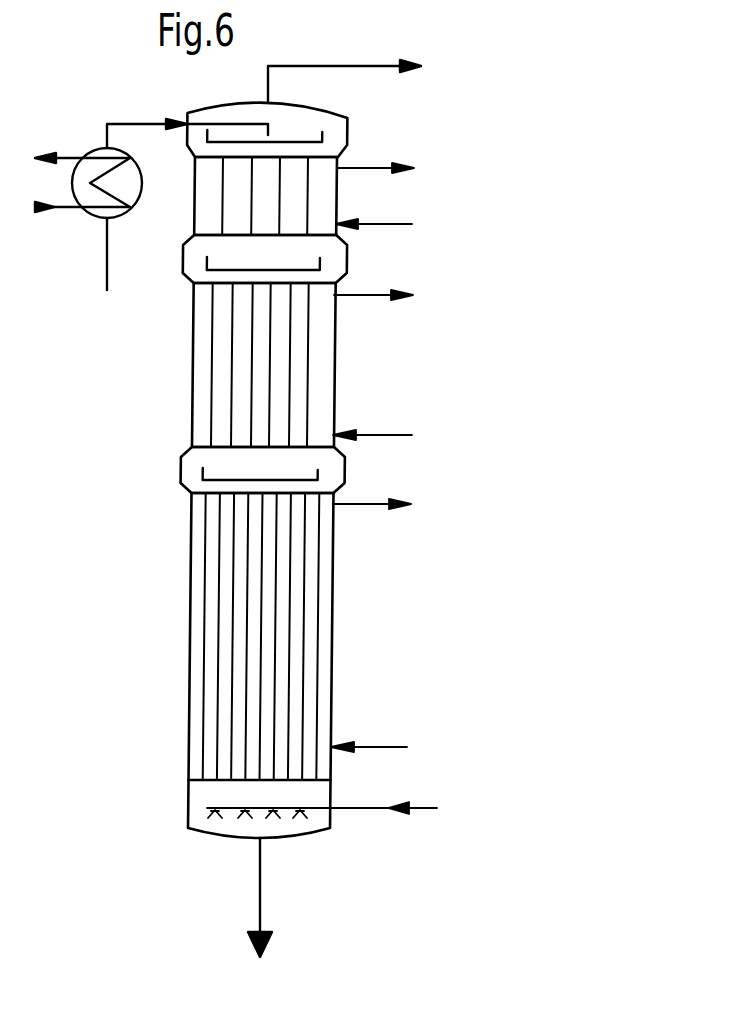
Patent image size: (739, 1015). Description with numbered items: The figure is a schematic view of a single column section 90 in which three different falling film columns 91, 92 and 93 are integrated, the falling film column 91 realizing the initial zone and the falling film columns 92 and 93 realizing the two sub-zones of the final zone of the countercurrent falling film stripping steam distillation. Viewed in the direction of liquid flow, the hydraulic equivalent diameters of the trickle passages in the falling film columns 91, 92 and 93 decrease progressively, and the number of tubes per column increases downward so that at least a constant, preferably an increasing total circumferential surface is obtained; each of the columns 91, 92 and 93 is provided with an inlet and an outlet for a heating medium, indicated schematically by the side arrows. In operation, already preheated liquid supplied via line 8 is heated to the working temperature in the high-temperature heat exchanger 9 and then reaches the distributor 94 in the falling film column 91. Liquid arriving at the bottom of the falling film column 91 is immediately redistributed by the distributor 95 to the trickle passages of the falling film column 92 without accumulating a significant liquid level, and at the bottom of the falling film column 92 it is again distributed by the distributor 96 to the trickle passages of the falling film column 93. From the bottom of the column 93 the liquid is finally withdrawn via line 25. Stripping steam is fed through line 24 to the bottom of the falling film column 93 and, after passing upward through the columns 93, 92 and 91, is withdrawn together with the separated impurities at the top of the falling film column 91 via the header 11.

The line 8 is at (105, 258).
The high-temperature heat exchanger 9 is at (88, 149).
The header 11 is at (317, 62).
The line 24 is at (396, 804).
The line 25 is at (257, 918).
The column section 90 is at (253, 470).
The falling film column 91 is at (337, 187).
The falling film column 92 is at (335, 363).
The falling film column 93 is at (332, 640).
The distributor 94 is at (322, 132).
The distributor 95 is at (322, 262).
The distributor 96 is at (321, 472).